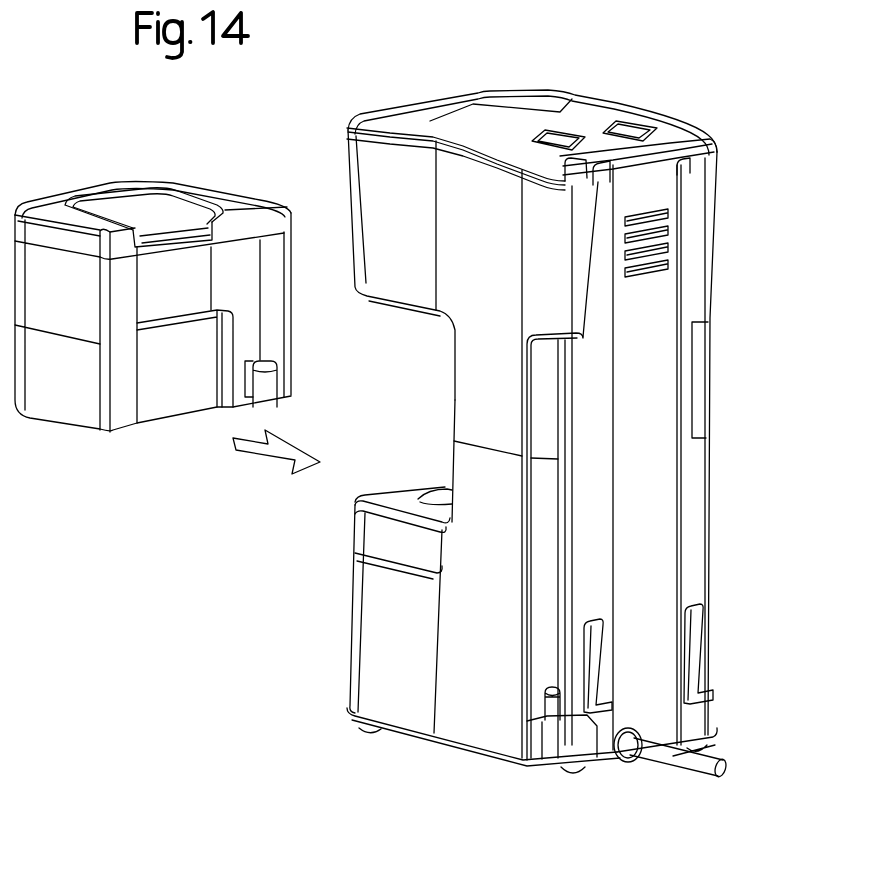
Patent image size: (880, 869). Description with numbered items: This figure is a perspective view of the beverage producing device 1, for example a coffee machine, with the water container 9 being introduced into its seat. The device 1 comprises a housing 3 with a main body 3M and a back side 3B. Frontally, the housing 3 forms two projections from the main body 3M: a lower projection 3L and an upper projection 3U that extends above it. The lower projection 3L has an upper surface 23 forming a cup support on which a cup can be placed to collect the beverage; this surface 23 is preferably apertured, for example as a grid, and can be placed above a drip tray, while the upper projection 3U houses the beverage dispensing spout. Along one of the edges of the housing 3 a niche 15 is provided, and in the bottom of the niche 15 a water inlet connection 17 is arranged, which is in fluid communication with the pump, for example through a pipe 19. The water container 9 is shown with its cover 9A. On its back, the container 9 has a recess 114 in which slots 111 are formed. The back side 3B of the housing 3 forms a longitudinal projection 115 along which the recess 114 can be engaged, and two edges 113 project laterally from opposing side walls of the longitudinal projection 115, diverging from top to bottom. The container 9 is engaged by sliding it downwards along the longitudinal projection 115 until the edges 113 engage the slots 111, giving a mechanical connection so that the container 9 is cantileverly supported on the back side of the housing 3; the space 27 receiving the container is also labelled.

The beverage producing device 1 is at (706, 97).
The housing 3 is at (720, 298).
The upper projection 3U is at (388, 240).
The main body 3M is at (470, 348).
The lower projection 3L is at (388, 637).
The back side 3B is at (660, 494).
The water container 9 is at (83, 437).
The cover 9A is at (175, 190).
The niche 15 is at (525, 366).
The water inlet connection 17 is at (542, 712).
The pipe 19 is at (278, 378).
The upper surface 23 is at (408, 505).
The tank receiving recess 27 is at (430, 418).
The slots 111 is at (228, 343).
The edges 113 is at (692, 622).
The recess 114 is at (218, 255).
The longitudinal projection 115 is at (600, 380).